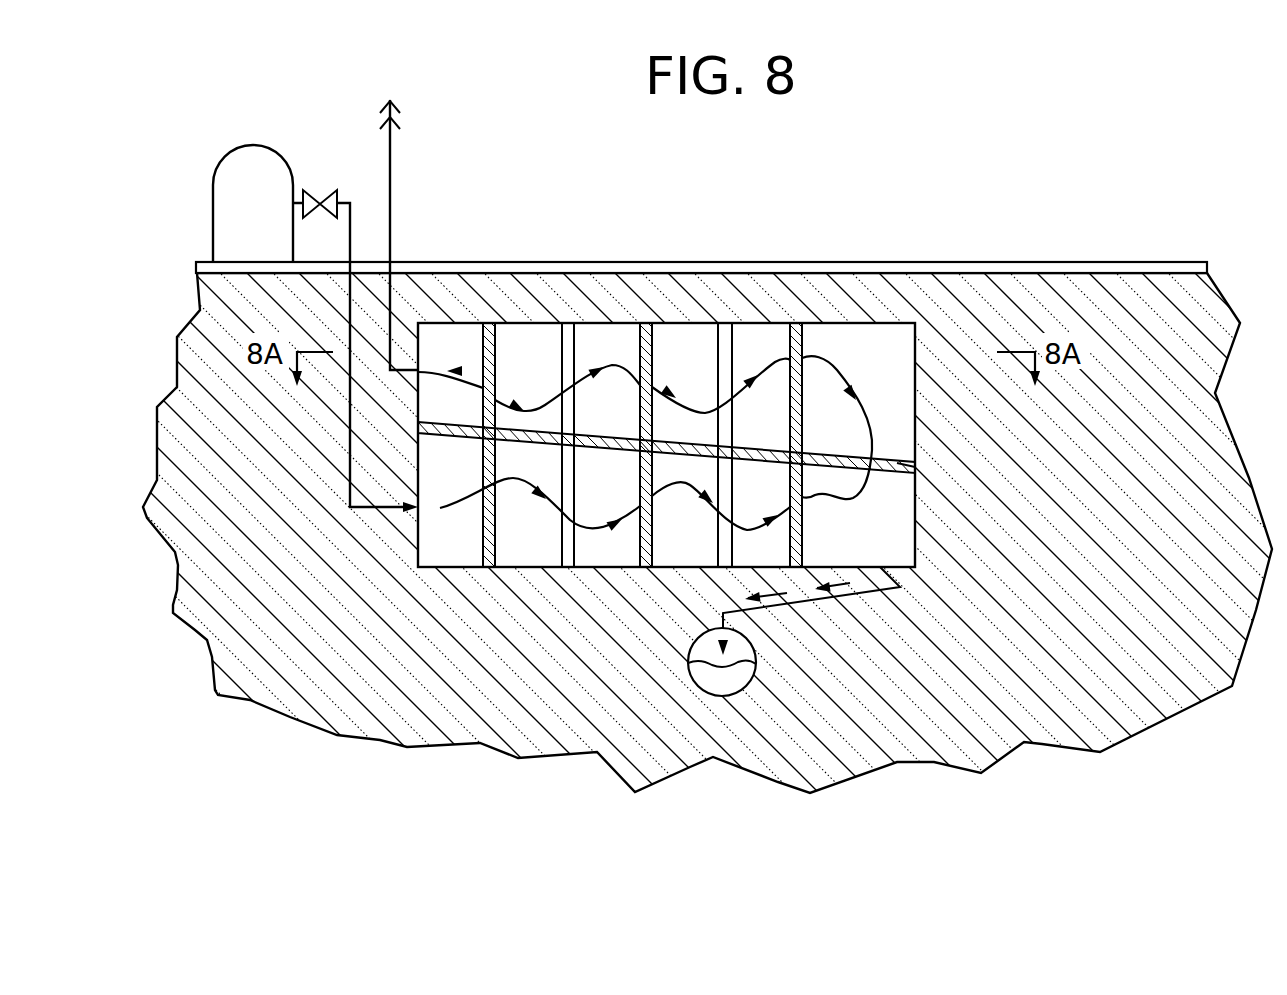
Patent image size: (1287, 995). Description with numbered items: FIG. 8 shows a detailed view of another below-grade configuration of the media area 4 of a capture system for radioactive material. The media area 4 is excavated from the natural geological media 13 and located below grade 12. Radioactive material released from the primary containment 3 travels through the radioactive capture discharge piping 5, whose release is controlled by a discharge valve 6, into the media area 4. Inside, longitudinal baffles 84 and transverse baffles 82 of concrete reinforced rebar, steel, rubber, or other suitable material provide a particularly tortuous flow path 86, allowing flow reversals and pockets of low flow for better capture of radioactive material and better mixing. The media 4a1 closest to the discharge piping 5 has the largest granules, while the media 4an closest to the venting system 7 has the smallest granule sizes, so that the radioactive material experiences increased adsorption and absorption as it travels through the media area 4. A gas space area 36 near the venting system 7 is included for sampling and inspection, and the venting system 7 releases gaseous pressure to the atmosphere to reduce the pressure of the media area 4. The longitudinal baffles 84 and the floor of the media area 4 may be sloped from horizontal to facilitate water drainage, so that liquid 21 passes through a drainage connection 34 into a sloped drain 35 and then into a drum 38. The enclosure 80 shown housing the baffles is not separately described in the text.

The primary containment 3 is at (258, 220).
The radioactive capture discharge piping 5 is at (347, 300).
The discharge valve 6 is at (323, 192).
The venting system 7 is at (394, 104).
The grade 12 is at (1066, 262).
The natural geological media 13 is at (1112, 474).
The gas space area 36 is at (457, 345).
The tortuous flow path 86 is at (613, 365).
The transverse baffles 82 is at (657, 345).
The longitudinal baffles 84 is at (897, 464).
The media closest to the vent system 4an is at (440, 398).
The media closest to the discharge pipe 4a1 is at (435, 468).
The media area 4 is at (917, 533).
The separation tank 80 is at (678, 570).
The liquid 21 is at (778, 596).
The sloped drain 35 is at (820, 593).
The drainage connection 34 is at (900, 584).
The drum 38 is at (757, 667).